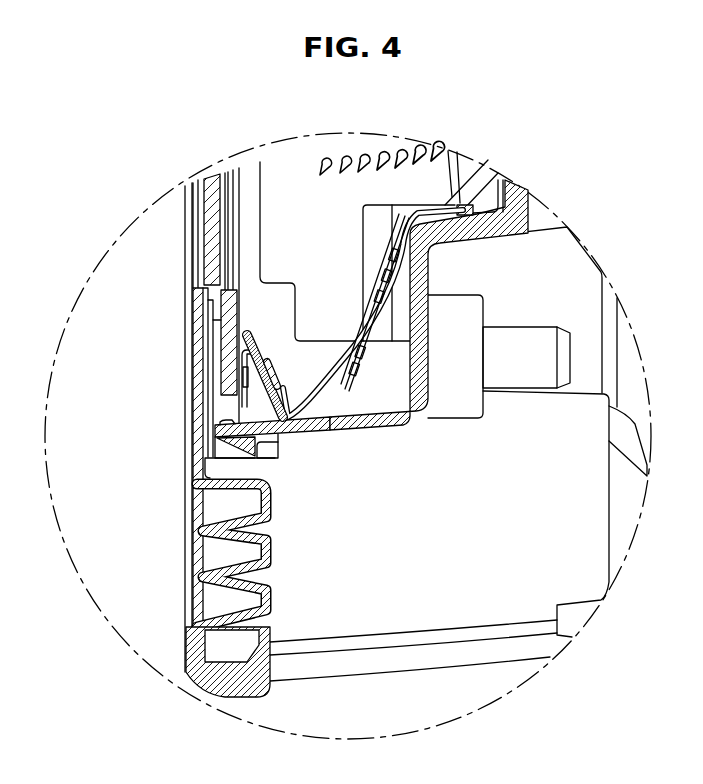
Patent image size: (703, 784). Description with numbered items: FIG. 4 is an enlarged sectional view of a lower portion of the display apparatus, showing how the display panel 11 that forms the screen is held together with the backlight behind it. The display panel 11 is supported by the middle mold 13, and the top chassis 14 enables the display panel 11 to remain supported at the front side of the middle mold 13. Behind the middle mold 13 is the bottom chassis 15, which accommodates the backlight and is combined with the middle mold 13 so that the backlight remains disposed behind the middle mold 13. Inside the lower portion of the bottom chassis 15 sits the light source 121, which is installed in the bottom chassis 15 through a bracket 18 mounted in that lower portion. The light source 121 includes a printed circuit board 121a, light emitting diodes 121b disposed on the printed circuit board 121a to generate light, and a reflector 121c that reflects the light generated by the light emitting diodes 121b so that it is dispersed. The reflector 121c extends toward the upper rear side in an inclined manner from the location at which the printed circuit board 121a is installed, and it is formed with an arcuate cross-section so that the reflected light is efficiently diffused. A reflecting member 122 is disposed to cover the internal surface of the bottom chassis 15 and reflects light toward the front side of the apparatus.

The display panel 11 is at (210, 263).
The middle mold 13 is at (220, 373).
The top chassis 14 is at (197, 422).
The bottom chassis 15 is at (519, 197).
The bracket 18 is at (313, 410).
The light source 121 is at (295, 342).
The printed circuit board 121a is at (248, 338).
The light emitting diodes 121b is at (283, 380).
The reflector 121c is at (347, 388).
The reflecting member 122 is at (473, 168).